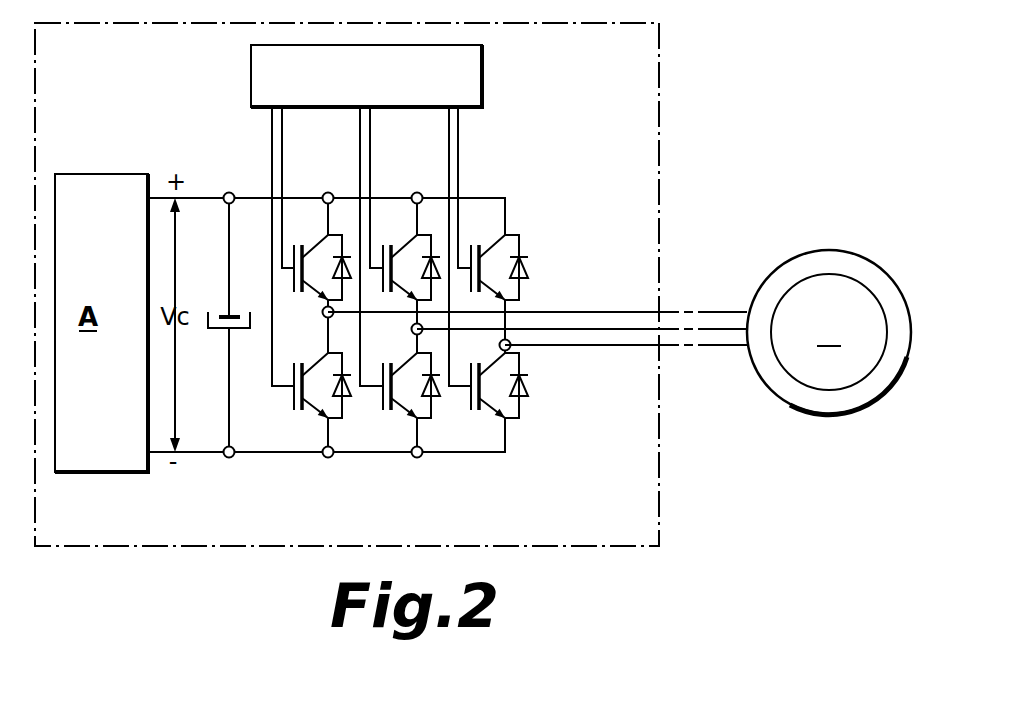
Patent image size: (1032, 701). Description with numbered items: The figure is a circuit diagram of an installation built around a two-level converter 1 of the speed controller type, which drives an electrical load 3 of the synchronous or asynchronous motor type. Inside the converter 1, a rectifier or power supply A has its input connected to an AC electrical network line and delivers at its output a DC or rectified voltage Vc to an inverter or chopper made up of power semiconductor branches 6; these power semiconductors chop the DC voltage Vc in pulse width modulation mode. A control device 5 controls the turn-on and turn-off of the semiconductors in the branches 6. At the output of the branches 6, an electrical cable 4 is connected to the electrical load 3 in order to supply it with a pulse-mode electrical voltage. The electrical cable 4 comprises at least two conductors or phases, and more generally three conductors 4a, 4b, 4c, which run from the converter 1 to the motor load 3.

The converter 1 is at (662, 108).
The electrical load 3 is at (860, 248).
The electrical cable 4 is at (547, 311).
The conductor 4a is at (703, 347).
The conductor 4b is at (723, 331).
The conductor 4c is at (703, 311).
The control device 5 is at (482, 76).
The power semiconductor branches 6 is at (417, 436).